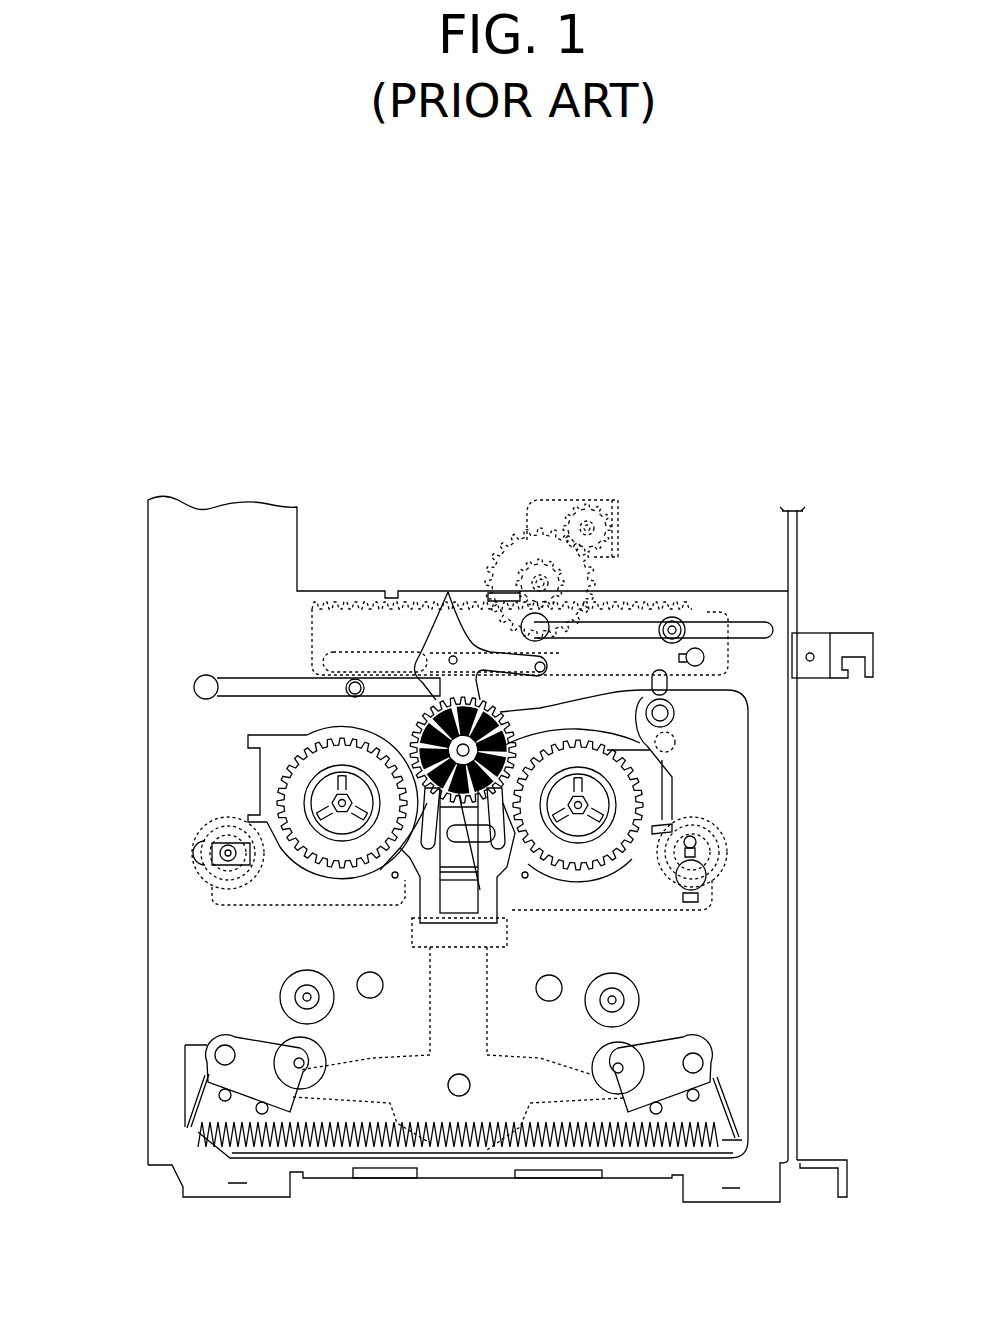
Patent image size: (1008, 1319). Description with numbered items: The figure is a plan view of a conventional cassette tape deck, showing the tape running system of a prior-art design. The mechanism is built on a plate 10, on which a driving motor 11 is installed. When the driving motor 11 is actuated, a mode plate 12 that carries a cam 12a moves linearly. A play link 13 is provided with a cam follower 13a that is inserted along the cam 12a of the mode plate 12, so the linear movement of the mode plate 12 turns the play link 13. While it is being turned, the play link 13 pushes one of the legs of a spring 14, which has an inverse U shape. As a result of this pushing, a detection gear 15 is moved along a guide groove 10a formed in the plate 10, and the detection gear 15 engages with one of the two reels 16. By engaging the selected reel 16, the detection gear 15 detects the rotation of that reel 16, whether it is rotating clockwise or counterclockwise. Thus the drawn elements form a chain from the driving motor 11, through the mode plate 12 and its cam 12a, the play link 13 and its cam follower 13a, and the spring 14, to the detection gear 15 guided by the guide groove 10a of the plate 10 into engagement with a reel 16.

The plate 10 is at (773, 805).
The guide groove 10a is at (748, 691).
The driving motor 11 is at (562, 500).
The mode plate 12 is at (353, 627).
The cam 12a is at (397, 658).
The play link 13 is at (448, 592).
The cam follower 13a is at (480, 712).
The spring 14 is at (480, 847).
The detection gear 15 is at (430, 718).
The reels 16 is at (283, 774).